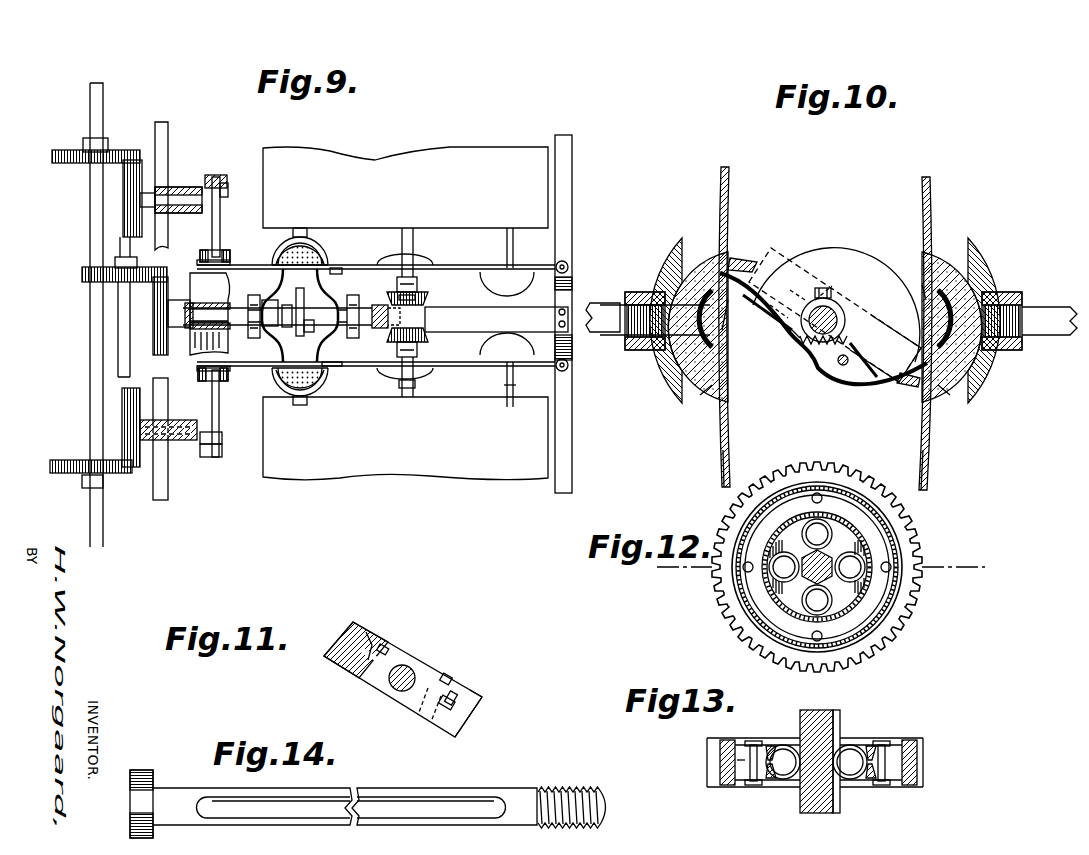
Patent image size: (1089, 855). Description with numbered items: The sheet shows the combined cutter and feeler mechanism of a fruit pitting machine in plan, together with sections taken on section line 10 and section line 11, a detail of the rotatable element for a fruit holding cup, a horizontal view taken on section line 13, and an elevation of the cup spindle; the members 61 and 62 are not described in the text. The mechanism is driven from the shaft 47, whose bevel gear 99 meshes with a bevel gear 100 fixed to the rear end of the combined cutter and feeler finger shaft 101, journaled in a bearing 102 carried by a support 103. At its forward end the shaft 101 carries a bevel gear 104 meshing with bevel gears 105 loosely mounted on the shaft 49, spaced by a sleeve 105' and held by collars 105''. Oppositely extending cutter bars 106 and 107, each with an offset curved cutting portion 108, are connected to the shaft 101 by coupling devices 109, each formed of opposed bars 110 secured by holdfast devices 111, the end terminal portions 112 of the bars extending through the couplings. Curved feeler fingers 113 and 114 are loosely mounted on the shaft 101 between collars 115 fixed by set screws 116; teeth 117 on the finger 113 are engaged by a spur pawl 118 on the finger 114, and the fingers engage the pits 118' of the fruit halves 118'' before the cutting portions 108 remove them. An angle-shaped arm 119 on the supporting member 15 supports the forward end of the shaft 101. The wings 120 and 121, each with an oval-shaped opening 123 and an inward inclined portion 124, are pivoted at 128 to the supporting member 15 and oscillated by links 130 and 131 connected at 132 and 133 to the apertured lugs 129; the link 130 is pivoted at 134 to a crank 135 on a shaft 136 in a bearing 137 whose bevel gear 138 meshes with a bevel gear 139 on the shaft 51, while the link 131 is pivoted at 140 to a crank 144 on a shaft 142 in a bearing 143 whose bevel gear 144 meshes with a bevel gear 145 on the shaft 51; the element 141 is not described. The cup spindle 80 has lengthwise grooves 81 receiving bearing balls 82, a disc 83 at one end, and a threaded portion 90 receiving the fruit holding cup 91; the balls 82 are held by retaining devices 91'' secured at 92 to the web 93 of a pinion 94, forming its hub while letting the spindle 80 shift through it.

In FIG. 9, the section line 10 is at (300, 228).
In FIG. 9, the section line 11 is at (157, 140).
In FIG. 12, the section line 13 is at (824, 567).
In FIG. 9, the supporting member 15 is at (573, 284).
In FIG. 9, the shaft 47 is at (130, 375).
In FIG. 9, the shaft 49 is at (418, 350).
In FIG. 9, the shaft 51 is at (90, 367).
In FIG. 9, the upper member 61 is at (405, 187).
In FIG. 9, the lower member 62 is at (405, 438).
In FIG. 9, the fruit holding cup spindle 80 is at (414, 243).
In FIG. 10, the fruit holding cup spindle 80 is at (625, 340).
In FIG. 12, the fruit holding cup spindle 80 is at (795, 558).
In FIG. 13, the fruit holding cup spindle 80 is at (832, 718).
In FIG. 14, the fruit holding cup spindle 80 is at (535, 796).
In FIG. 9, the lengthwise extending grooves 81 is at (506, 395).
In FIG. 12, the lengthwise extending grooves 81 is at (866, 577).
In FIG. 13, the lengthwise extending grooves 81 is at (841, 722).
In FIG. 14, the lengthwise extending grooves 81 is at (455, 797).
In FIG. 12, the bearing balls 82 is at (838, 545).
In FIG. 13, the bearing balls 82 is at (816, 762).
In FIG. 14, the disc 83 is at (150, 776).
In FIG. 9, the threaded portion 90 is at (603, 317).
In FIG. 10, the threaded portion 90 is at (838, 320).
In FIG. 14, the threaded portion 90 is at (584, 790).
In FIG. 9, the fruit holding cup 91 is at (403, 317).
In FIG. 10, the fruit holding cup 91 is at (820, 317).
In FIG. 12, the fruit holding cup 91 is at (817, 567).
In FIG. 13, the retaining devices 91'' is at (819, 748).
In FIG. 12, the securing means 92 is at (811, 500).
In FIG. 13, the securing means 92 is at (754, 786).
In FIG. 13, the web 93 is at (735, 786).
In FIG. 12, the pinion 94 is at (898, 638).
In FIG. 13, the pinion 94 is at (924, 771).
In FIG. 9, the bevel gear 99 is at (86, 278).
In FIG. 9, the bevel gear 100 is at (172, 320).
In FIG. 9, the combined cutter and feeler finger shaft 101 is at (266, 300).
In FIG. 10, the combined cutter and feeler finger shaft 101 is at (838, 310).
In FIG. 11, the combined cutter and feeler finger shaft 101 is at (410, 671).
In FIG. 9, the bearing 102 is at (205, 302).
In FIG. 9, the support 103 is at (228, 346).
In FIG. 9, the bevel gear 104 is at (359, 312).
In FIG. 9, the bevel gears 105 is at (427, 316).
In FIG. 9, the sleeve 105' is at (418, 316).
In FIG. 9, the collars 105'' is at (431, 317).
In FIG. 9, the cutter bar 106 is at (340, 282).
In FIG. 10, the cutter bar 106 is at (832, 290).
In FIG. 9, the cutter bar 107 is at (335, 367).
In FIG. 10, the cutter bar 107 is at (908, 386).
In FIG. 11, the cutter bar 107 is at (470, 728).
In FIG. 9, the offset curved cutting portion 108 is at (326, 262).
In FIG. 10, the offset curved cutting portion 108 is at (745, 258).
In FIG. 11, the offset curved cutting portion 108 is at (330, 645).
In FIG. 9, the coupling devices 109 is at (255, 317).
In FIG. 10, the coupling devices 109 is at (760, 310).
In FIG. 11, the coupling devices 109 is at (472, 700).
In FIG. 10, the opposed bars 110 is at (882, 342).
In FIG. 11, the opposed bars 110 is at (349, 622).
In FIG. 11, the holdfast devices 111 is at (392, 650).
In FIG. 11, the end terminal portions 112 is at (384, 645).
In FIG. 9, the feeler finger 113 is at (286, 300).
In FIG. 10, the feeler finger 113 is at (803, 268).
In FIG. 9, the feeler finger 114 is at (315, 328).
In FIG. 10, the feeler finger 114 is at (857, 375).
In FIG. 9, the collars 115 is at (307, 311).
In FIG. 10, the collars 115 is at (790, 331).
In FIG. 9, the set screws 116 is at (278, 316).
In FIG. 10, the teeth 117 is at (805, 348).
In FIG. 9, the spur pawl 118 is at (297, 315).
In FIG. 10, the spur pawl 118 is at (823, 336).
In FIG. 10, the pits 118' is at (829, 409).
In FIG. 9, the halves 118'' is at (311, 310).
In FIG. 10, the halves 118'' is at (853, 309).
In FIG. 9, the angle-shaped arm 119 is at (496, 319).
In FIG. 9, the wing 120 is at (485, 262).
In FIG. 10, the wing 120 is at (931, 202).
In FIG. 9, the wing 121 is at (458, 368).
In FIG. 10, the wing 121 is at (729, 195).
In FIG. 10, the oval-shaped opening 123 is at (924, 283).
In FIG. 9, the inclined portion 124 is at (355, 264).
In FIG. 10, the inclined portion 124 is at (728, 466).
In FIG. 9, the pivot 128 is at (568, 264).
In FIG. 9, the apertured lugs 129 is at (225, 262).
In FIG. 9, the link 130 is at (221, 210).
In FIG. 9, the link 131 is at (219, 406).
In FIG. 9, the pivotal connection 132 is at (204, 254).
In FIG. 9, the pivotal connection 133 is at (228, 374).
In FIG. 9, the pivotal connection 134 is at (228, 189).
In FIG. 9, the crank 135 is at (222, 176).
In FIG. 9, the shaft 136 is at (183, 187).
In FIG. 9, the bearing 137 is at (165, 185).
In FIG. 9, the bevel gear 138 is at (125, 210).
In FIG. 9, the bevel gear 139 is at (57, 158).
In FIG. 9, the pivotal connection 140 is at (222, 453).
In FIG. 9, the nut 141 is at (222, 437).
In FIG. 9, the shaft 142 is at (193, 413).
In FIG. 9, the bearing 143 is at (168, 452).
In FIG. 9, the crank and bevel gear 144 is at (122, 420).
In FIG. 9, the bevel gear 145 is at (50, 466).